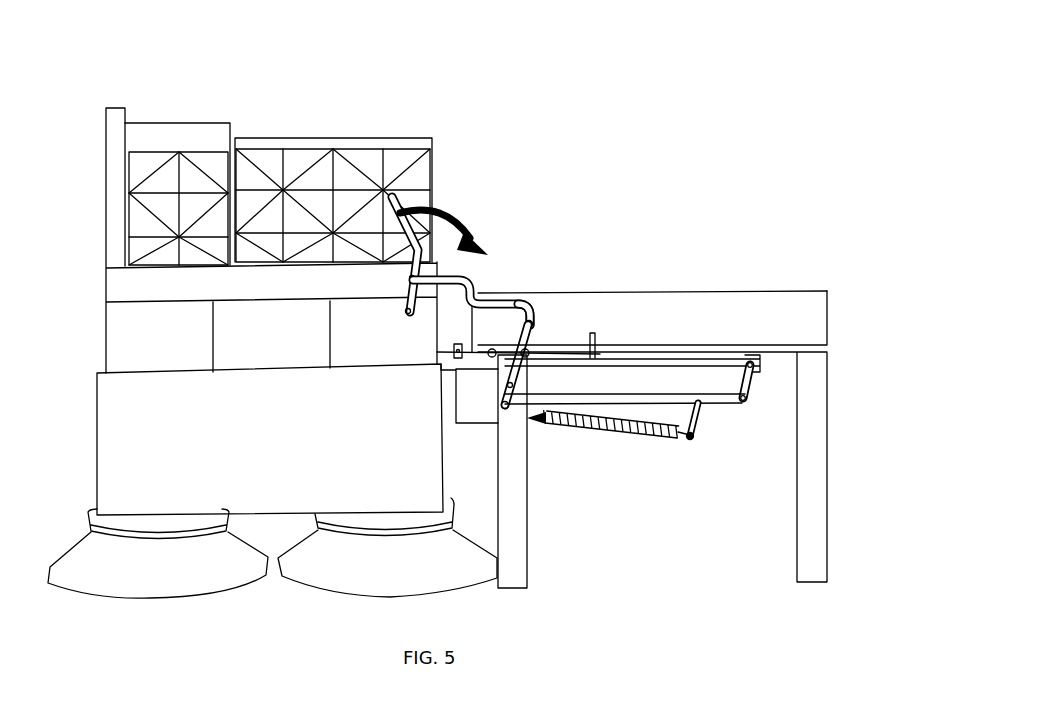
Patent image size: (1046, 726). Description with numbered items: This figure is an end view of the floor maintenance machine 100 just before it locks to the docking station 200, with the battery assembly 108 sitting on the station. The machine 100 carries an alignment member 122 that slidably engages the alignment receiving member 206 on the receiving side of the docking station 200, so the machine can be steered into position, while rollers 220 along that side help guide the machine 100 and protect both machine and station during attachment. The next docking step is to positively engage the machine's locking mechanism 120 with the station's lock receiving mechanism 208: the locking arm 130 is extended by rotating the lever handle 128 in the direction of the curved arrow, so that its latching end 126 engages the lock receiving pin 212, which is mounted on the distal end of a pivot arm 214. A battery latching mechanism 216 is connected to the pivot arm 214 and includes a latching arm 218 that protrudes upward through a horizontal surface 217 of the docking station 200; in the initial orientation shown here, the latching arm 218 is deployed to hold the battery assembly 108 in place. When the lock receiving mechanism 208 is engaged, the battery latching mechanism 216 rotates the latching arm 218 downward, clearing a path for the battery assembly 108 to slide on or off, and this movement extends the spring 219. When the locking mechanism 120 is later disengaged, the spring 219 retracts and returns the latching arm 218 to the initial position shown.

The floor maintenance machine 100 is at (302, 449).
The battery assembly 108 is at (386, 137).
The locking mechanism 120 is at (537, 272).
The alignment member 122 is at (447, 349).
The latching end 126 is at (545, 318).
The lever handle 128 is at (397, 201).
The locking arm 130 is at (507, 285).
The docking station 200 is at (744, 224).
The alignment receiving member 206 is at (451, 362).
The lock receiving mechanism 208 is at (533, 300).
The lock receiving pin 212 is at (540, 340).
The pivot arm 214 is at (523, 408).
The battery latching mechanism 216 is at (745, 414).
The horizontal surface 217 is at (703, 343).
The latching arm 218 is at (597, 331).
The spring 219 is at (628, 432).
The rollers 220 is at (453, 402).